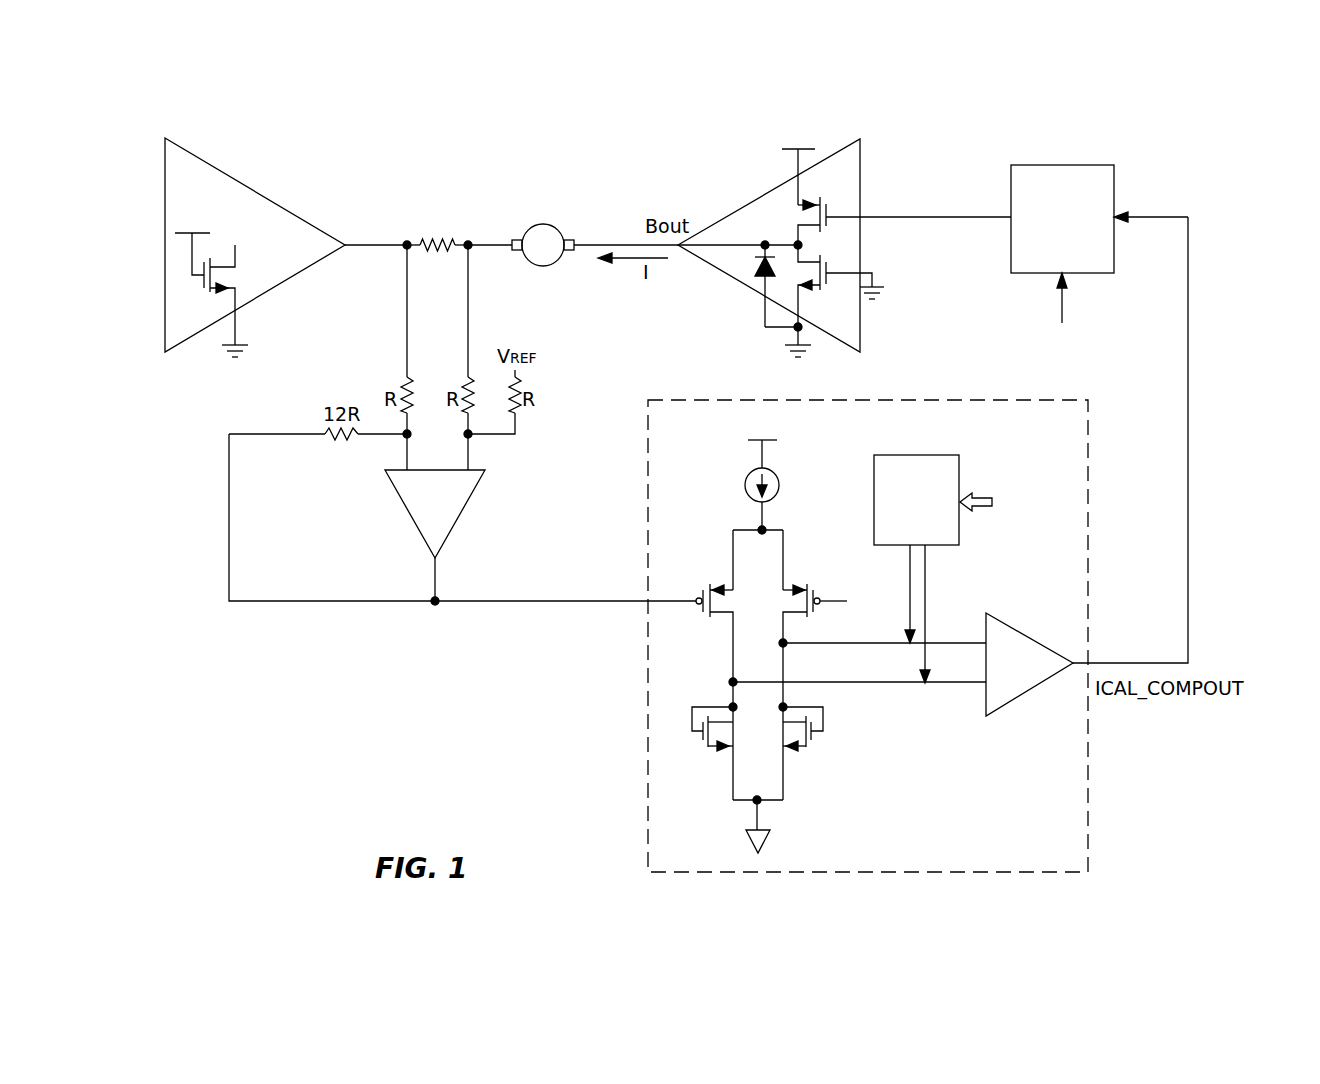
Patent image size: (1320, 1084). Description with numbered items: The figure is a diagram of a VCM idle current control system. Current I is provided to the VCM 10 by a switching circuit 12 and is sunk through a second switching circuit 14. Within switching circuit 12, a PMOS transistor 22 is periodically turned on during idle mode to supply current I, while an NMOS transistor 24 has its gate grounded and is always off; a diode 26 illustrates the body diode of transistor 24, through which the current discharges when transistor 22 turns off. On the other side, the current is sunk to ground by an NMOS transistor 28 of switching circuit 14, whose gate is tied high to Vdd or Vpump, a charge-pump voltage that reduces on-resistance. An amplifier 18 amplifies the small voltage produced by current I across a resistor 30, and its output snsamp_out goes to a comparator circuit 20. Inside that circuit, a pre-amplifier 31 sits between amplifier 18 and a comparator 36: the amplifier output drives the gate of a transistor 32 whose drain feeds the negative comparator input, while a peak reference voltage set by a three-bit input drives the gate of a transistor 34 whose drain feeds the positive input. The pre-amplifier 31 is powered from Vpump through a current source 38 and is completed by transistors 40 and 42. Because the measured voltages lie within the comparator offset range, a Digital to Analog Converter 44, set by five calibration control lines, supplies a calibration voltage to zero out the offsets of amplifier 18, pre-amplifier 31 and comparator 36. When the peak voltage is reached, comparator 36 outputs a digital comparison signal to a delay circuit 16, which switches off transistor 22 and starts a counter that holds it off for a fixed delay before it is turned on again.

The VCM 10 is at (553, 226).
The switching circuit 12 is at (862, 166).
The switching circuit 14 is at (258, 191).
The delay circuit 16 is at (1080, 165).
The amplifier 18 is at (452, 532).
The comparator circuit 20 is at (902, 400).
The PMOS transistor 22 is at (829, 203).
The NMOS transistor 24 is at (829, 261).
The diode 26 is at (760, 282).
The NMOS transistor 28 is at (232, 277).
The resistor 30 is at (440, 240).
The pre-amplifier 31 is at (721, 503).
The transistor 32 is at (706, 588).
The transistor 34 is at (809, 616).
The comparator 36 is at (1012, 626).
The current source 38 is at (778, 480).
The transistor 40 is at (710, 752).
The transistor 42 is at (810, 752).
The Digital to Analog Converter 44 is at (945, 455).